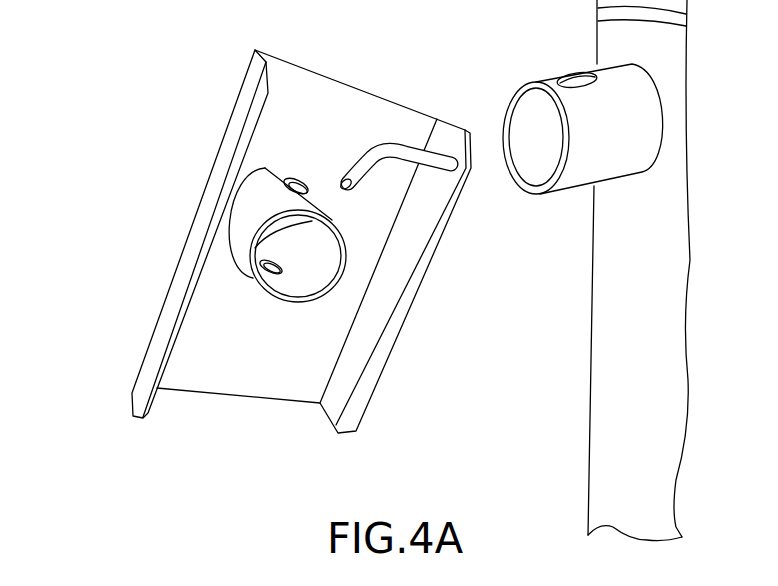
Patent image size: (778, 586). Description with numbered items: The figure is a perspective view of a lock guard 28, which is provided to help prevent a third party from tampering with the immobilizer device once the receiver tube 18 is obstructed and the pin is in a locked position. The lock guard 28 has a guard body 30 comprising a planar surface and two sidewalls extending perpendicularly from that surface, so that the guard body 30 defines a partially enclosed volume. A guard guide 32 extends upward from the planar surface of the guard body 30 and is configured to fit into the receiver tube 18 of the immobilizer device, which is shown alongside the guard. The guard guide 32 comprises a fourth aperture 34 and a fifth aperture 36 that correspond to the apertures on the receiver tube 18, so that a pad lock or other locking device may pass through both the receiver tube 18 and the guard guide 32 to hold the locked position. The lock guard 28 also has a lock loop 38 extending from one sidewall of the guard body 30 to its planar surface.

The lock guard 28 is at (265, 219).
The guard body 30 is at (320, 75).
The guard guide 32 is at (255, 240).
The fourth aperture 34 is at (301, 180).
The fifth aperture 36 is at (281, 271).
The lock loop 38 is at (417, 147).
The receiver tube 18 is at (580, 176).